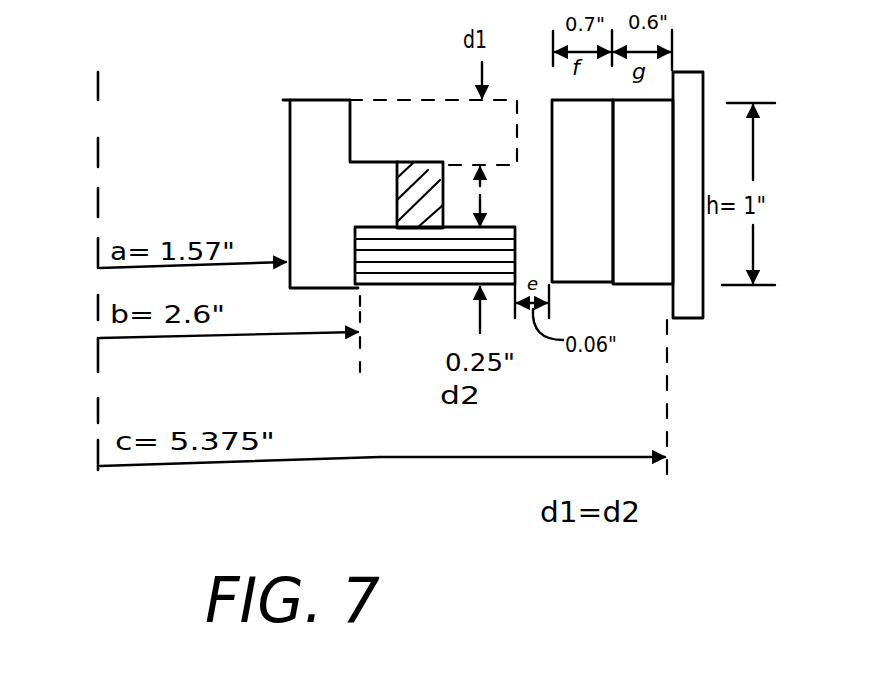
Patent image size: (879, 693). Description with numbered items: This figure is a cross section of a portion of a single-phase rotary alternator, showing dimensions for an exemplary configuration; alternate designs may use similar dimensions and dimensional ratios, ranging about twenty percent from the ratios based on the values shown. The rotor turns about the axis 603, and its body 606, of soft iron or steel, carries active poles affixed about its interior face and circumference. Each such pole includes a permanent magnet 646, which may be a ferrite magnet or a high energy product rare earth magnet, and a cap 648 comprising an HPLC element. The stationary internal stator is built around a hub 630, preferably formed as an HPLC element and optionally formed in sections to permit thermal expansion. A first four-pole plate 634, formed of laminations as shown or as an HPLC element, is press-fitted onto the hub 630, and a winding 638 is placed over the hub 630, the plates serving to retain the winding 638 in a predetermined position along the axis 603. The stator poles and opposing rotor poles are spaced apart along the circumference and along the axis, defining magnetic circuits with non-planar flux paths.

The axis 603 is at (98, 470).
The body 606 is at (703, 82).
The hub 630 is at (321, 100).
The first four-pole plate 634 is at (438, 285).
The winding 638 is at (432, 160).
The permanent magnet 646 is at (655, 182).
The cap 648 is at (600, 178).